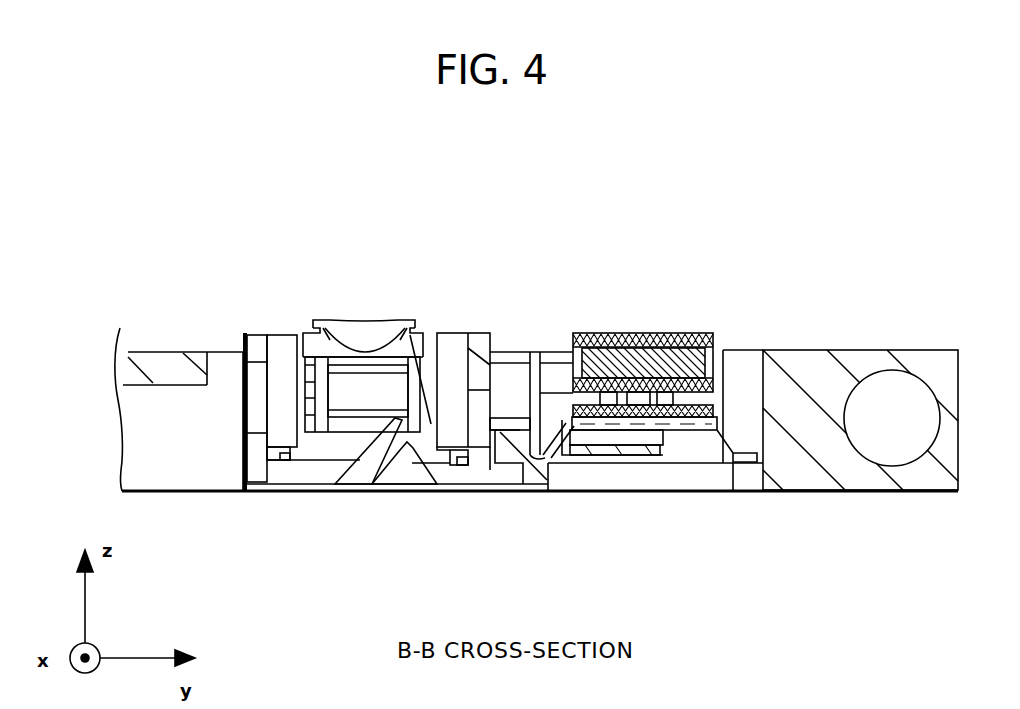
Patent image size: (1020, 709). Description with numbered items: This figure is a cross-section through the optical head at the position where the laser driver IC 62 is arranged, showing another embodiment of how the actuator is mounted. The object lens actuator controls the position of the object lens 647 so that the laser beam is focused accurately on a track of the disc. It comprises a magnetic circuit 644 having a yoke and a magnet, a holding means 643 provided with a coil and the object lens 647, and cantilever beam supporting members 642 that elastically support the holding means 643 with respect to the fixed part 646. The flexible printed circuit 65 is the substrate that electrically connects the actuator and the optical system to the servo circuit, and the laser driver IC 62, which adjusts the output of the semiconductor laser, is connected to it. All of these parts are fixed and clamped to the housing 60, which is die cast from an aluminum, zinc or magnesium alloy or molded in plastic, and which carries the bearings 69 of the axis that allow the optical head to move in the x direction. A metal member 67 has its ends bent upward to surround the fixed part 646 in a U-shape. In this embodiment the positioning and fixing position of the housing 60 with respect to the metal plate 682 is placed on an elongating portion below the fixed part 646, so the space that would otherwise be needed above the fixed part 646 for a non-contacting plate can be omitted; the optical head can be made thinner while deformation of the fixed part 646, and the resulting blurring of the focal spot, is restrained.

The housing 60 is at (830, 360).
The laser driver IC 62 is at (676, 337).
The flexible printed circuit 65 is at (583, 333).
The metal member 67 is at (620, 453).
The bearings 69 is at (905, 463).
The cantilever beam supporting members 642 is at (502, 352).
The holding means 643 is at (303, 333).
The magnetic circuit 644 is at (243, 337).
The fixed part 646 is at (567, 393).
The object lens 647 is at (350, 347).
The metal plate 682 is at (736, 363).